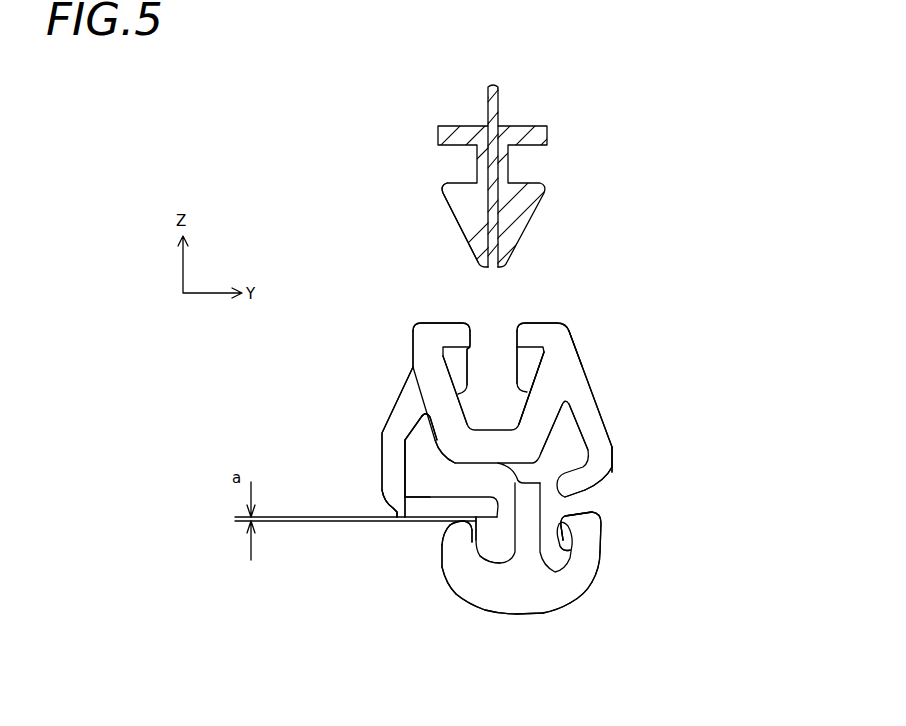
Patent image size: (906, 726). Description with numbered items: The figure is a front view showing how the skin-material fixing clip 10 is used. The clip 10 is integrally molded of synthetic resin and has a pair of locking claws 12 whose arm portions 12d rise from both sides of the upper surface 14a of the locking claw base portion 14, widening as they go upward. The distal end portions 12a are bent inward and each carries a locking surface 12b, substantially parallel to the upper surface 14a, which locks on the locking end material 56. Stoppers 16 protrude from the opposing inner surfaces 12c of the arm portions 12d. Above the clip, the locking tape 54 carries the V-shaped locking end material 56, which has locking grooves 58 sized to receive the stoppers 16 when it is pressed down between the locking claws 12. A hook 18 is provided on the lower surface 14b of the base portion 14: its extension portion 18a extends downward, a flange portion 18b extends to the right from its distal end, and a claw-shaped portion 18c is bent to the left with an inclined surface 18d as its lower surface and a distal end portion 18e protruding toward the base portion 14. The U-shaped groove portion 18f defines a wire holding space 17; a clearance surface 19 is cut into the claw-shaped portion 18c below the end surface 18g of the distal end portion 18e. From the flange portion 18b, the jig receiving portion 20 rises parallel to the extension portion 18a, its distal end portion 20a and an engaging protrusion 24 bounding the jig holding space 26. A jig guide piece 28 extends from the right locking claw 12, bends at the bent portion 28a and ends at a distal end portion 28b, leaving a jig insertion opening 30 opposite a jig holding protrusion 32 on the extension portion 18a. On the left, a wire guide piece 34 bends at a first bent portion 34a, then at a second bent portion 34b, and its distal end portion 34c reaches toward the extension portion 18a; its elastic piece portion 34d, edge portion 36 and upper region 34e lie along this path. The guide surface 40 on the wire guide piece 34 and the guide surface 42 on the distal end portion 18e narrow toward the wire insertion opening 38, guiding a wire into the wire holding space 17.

The skin-material fixing clip 10 is at (515, 468).
The locking claws 12 is at (415, 380).
The distal end portions 12a is at (453, 332).
The locking surface 12b is at (437, 340).
The inner surfaces 12c is at (413, 353).
The arm portions 12d is at (452, 392).
The locking claw base portion 14 is at (398, 413).
The upper surface 14a is at (536, 403).
The lower surface 14b is at (610, 473).
The stoppers 16 is at (570, 372).
The wire holding space 17 is at (523, 580).
The hook 18 is at (580, 597).
The extension portion 18a is at (590, 562).
The flange portion 18b is at (560, 606).
The claw-shaped portion 18c is at (504, 605).
The inclined surface 18d is at (545, 606).
The distal end portion 18e is at (440, 546).
The U-shaped groove portion 18f is at (490, 565).
The end surface 18g is at (458, 585).
The clearance surface 19 is at (446, 575).
The jig receiving portion 20 is at (604, 535).
The distal end portion 20a is at (600, 519).
The engaging protrusion 24 is at (598, 572).
The jig holding space 26 is at (575, 598).
The jig guide piece 28 is at (613, 422).
The bent portion 28a is at (613, 447).
The distal end portion 28b is at (605, 488).
The jig insertion opening 30 is at (585, 499).
The jig holding protrusion 32 is at (575, 548).
The wire guide piece 34 is at (382, 478).
The first bent portion 34a is at (465, 455).
The second bent portion 34b is at (395, 506).
The distal end portion 34c is at (473, 548).
The elastic piece portion 34d is at (405, 445).
The elastic member top 34e is at (424, 412).
The edge portion 36 is at (403, 497).
The wire insertion opening 38 is at (450, 525).
The guide surface 40 is at (450, 482).
The guide surface 42 is at (445, 540).
The locking tape 54 is at (495, 88).
The locking end material 56 is at (527, 182).
The locking grooves 58 is at (480, 216).